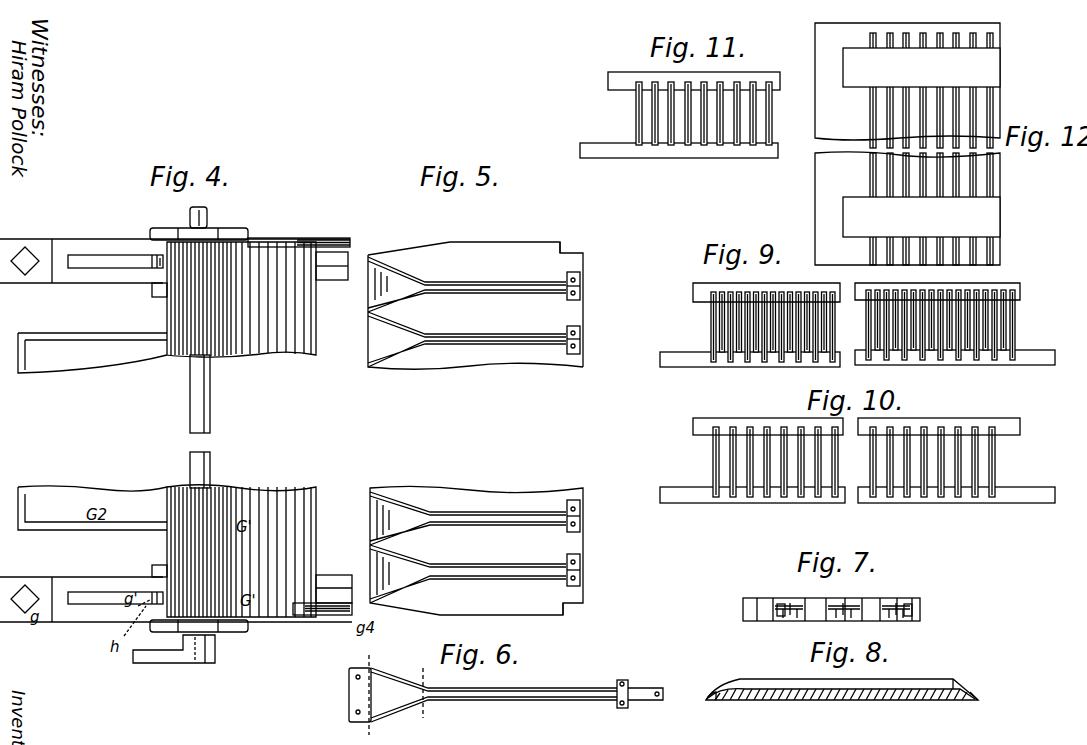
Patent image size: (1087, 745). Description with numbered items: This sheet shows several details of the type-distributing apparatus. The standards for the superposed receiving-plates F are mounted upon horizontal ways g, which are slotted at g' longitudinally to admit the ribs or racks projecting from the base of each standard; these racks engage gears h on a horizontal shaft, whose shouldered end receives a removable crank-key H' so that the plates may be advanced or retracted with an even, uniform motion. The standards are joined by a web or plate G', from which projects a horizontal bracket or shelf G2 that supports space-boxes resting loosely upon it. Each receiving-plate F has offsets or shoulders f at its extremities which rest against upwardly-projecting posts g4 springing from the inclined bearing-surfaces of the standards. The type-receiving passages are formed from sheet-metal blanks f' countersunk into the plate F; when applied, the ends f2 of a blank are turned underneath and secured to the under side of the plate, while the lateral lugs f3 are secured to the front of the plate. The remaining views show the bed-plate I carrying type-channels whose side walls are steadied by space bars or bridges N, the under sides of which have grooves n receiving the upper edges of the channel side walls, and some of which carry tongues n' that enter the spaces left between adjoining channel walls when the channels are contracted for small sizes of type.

In FIG. 4, the horizontal way g is at (175, 268).
In FIG. 4, the slot g' is at (115, 261).
In FIG. 4, the gear h is at (146, 268).
In FIG. 4, the web or plate G' is at (233, 347).
In FIG. 4, the horizontal bracket or shelf G2 is at (92, 353).
In FIG. 4, the upwardly-projecting post g4 is at (310, 254).
In FIG. 4, the removable crank-key H' is at (174, 661).
In FIG. 5, the receiving-plate F is at (475, 428).
In FIG. 7, the receiving-plate F is at (838, 600).
In FIG. 8, the receiving-plate F is at (842, 699).
In FIG. 5, the offset or shoulder f is at (565, 429).
In FIG. 5, the sheet-metal blank f' is at (467, 430).
In FIG. 6, the sheet-metal blank f' is at (494, 695).
In FIG. 7, the sheet-metal blank f' is at (842, 599).
In FIG. 8, the sheet-metal blank f' is at (841, 681).
In FIG. 6, the end of the blank f2 is at (497, 694).
In FIG. 8, the end of the blank f2 is at (714, 704).
In FIG. 5, the lateral lug f3 is at (582, 337).
In FIG. 6, the lateral lug f3 is at (630, 692).
In FIG. 7, the lateral lug f3 is at (914, 612).
In FIG. 9, the groove n is at (703, 277).
In FIG. 10, the groove n is at (867, 447).
In FIG. 9, the tongue n' is at (865, 312).
In FIG. 9, the space bar or bridge N is at (870, 284).
In FIG. 10, the space bar or bridge N is at (856, 417).
In FIG. 11, the space bar or bridge N is at (694, 72).
In FIG. 12, the space bar or bridge N is at (921, 142).
In FIG. 9, the plate I is at (857, 369).
In FIG. 10, the plate I is at (857, 495).
In FIG. 11, the plate I is at (679, 158).
In FIG. 12, the plate I is at (907, 144).